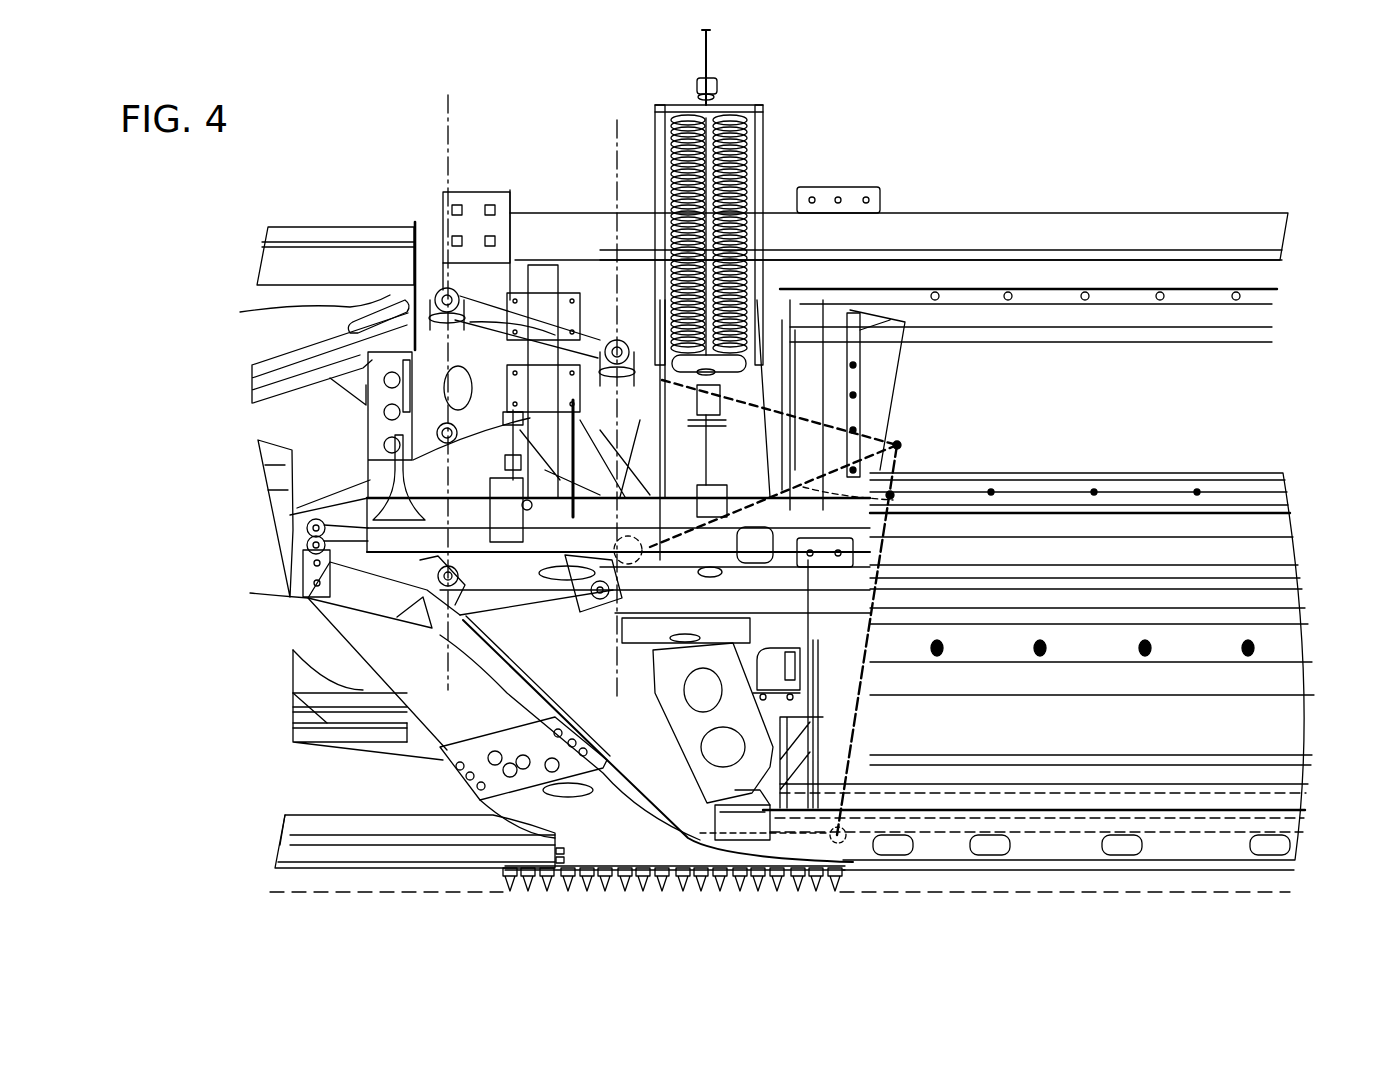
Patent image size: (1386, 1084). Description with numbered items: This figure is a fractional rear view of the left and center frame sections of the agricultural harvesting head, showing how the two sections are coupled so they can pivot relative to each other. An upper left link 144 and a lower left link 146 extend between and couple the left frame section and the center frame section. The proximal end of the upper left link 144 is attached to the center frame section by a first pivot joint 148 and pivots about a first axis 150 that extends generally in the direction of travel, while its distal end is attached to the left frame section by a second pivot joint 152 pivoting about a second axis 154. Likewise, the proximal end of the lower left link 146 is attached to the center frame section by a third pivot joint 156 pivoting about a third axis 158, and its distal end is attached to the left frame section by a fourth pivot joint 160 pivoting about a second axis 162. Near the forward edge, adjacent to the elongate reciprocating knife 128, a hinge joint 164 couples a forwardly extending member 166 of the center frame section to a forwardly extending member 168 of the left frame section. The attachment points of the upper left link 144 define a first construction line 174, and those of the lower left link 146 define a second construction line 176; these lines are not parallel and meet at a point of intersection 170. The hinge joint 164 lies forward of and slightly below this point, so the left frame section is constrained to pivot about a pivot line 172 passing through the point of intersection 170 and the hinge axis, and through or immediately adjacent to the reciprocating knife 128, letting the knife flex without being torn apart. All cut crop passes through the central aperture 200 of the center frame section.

The reciprocating knife 128 is at (897, 893).
The upper left link 144 is at (480, 320).
The lower left link 146 is at (497, 585).
The first pivot joint 148 is at (612, 338).
The first axis 150 is at (614, 127).
The second pivot joint 152 is at (420, 318).
The second axis 154 is at (447, 110).
The third pivot joint 156 is at (600, 598).
The third axis 158 is at (630, 685).
The fourth pivot joint 160 is at (420, 596).
The second axis 162 is at (445, 667).
The hinge joint 164 is at (857, 866).
The forwardly extending member 166 is at (770, 878).
The forwardly extending member 168 is at (683, 855).
The point of intersection 170 is at (900, 445).
The pivot line 172 is at (858, 723).
The first construction line 174 is at (800, 417).
The second construction line 176 is at (880, 495).
The central aperture 200 is at (1145, 403).